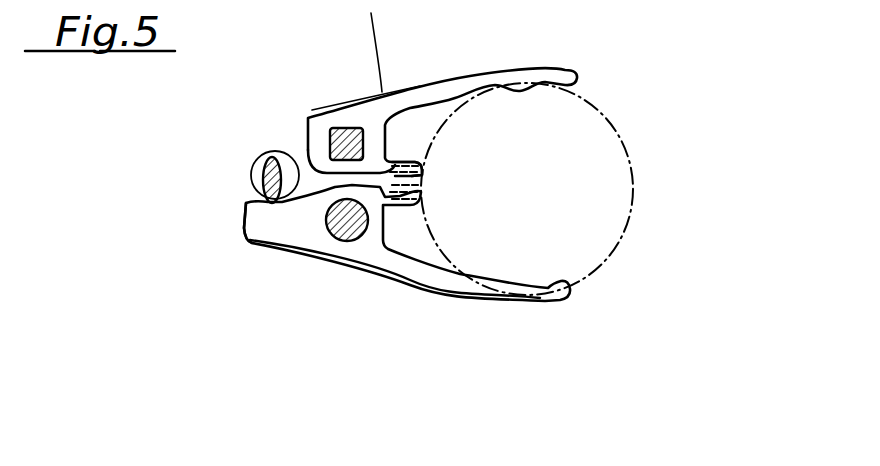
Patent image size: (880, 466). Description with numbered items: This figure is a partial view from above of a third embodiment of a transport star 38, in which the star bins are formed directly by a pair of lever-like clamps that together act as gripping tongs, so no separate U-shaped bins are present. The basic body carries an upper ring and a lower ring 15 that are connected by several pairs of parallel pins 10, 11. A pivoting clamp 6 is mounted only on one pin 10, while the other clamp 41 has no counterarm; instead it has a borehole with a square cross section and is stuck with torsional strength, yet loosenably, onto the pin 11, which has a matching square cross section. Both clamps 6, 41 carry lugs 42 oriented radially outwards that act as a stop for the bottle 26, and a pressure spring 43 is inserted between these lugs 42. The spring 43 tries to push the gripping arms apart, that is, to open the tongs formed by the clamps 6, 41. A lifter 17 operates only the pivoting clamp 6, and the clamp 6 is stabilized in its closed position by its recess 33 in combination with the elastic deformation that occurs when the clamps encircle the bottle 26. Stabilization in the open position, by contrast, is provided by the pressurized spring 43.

The pivoting clamp 6 is at (528, 294).
The pin 10 is at (350, 226).
The pin 11 is at (350, 143).
The lower ring 15 is at (375, 273).
The lifter 17 is at (273, 178).
The bottle 26 is at (633, 207).
The recess 33 is at (243, 238).
The transport star 38 is at (636, 287).
The clamp 41 is at (531, 76).
The lug 42 is at (403, 162).
The pressure spring 43 is at (318, 181).